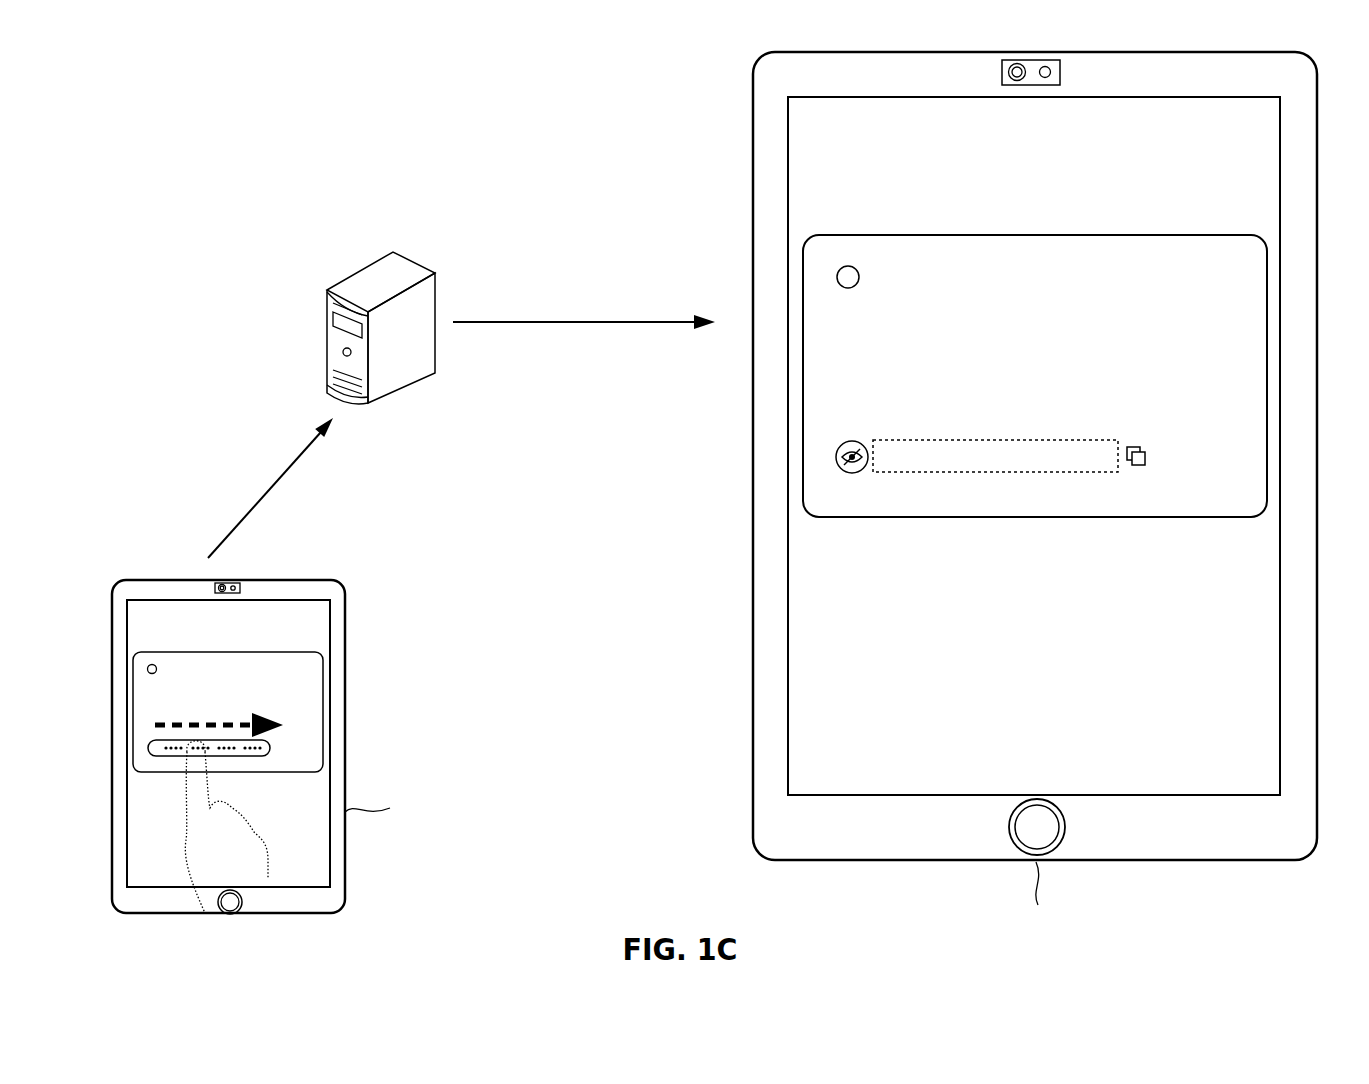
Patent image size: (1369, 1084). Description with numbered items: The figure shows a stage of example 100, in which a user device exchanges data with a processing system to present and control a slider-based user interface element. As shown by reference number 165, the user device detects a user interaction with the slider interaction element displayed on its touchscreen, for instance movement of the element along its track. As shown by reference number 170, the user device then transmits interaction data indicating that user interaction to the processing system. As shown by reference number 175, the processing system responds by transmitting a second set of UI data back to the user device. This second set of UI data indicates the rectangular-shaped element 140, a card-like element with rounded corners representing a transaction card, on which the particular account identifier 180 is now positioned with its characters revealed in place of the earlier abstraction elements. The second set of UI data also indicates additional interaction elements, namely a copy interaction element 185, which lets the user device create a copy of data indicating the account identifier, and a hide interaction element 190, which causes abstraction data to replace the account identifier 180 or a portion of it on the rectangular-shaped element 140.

The example 100 is at (190, 64).
The rectangular-shaped element 140 is at (1007, 235).
The user device detecting user interaction 165 is at (345, 722).
The interaction data transmission 170 is at (254, 486).
The second set of UI data transmission 175 is at (584, 281).
The account identifier 180 is at (972, 472).
The copy interaction element 185 is at (1137, 472).
The hide interaction element 190 is at (858, 473).